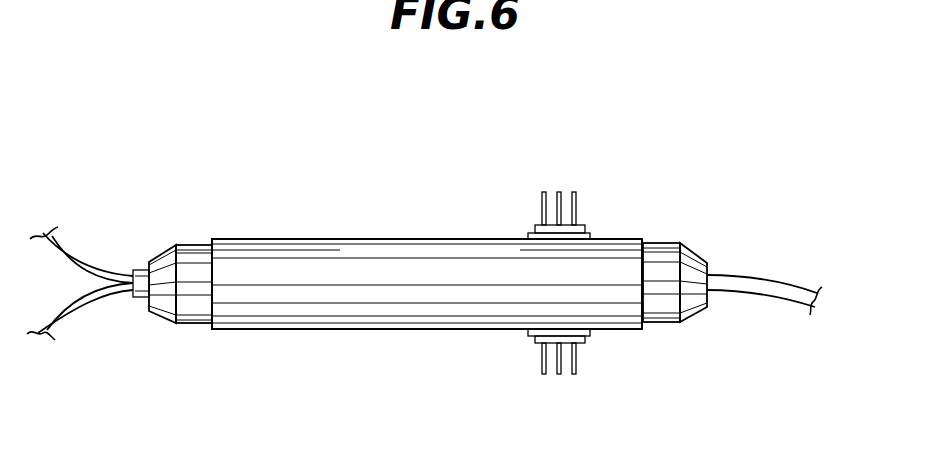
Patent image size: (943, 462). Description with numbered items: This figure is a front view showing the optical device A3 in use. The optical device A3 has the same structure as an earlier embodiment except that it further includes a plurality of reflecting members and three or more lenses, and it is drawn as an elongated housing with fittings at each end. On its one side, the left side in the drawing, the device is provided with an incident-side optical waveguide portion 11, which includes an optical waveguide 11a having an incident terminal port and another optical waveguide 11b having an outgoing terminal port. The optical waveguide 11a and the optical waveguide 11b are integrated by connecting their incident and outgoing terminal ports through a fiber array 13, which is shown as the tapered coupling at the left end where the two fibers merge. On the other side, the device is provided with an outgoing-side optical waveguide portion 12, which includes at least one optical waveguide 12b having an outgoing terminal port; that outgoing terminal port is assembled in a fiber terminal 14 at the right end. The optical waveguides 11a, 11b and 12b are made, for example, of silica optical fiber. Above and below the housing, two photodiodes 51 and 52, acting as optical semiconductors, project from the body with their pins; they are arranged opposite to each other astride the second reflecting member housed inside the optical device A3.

The incident-side optical waveguide portion 11 is at (124, 204).
The optical waveguide 11a is at (79, 266).
The optical waveguide 11b is at (62, 317).
The outgoing-side optical waveguide portion 12 is at (717, 201).
The optical waveguide 12b is at (777, 277).
The fiber array 13 is at (190, 243).
The fiber terminal 14 is at (663, 247).
The optical device A3 is at (382, 238).
The photodiode 51 is at (538, 223).
The photodiode 52 is at (537, 343).